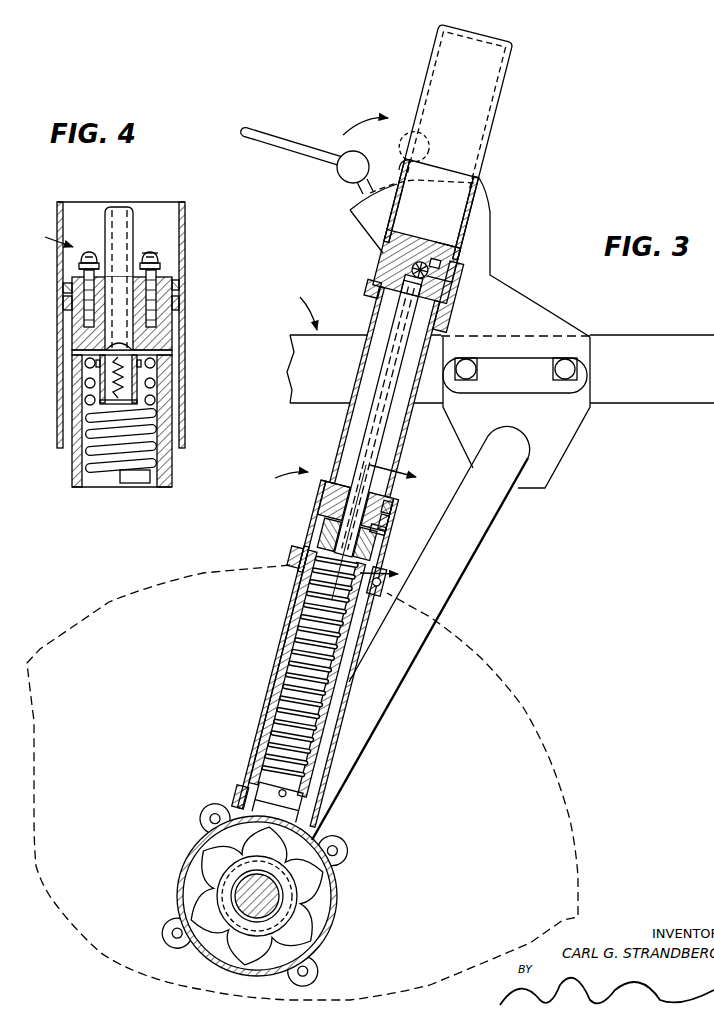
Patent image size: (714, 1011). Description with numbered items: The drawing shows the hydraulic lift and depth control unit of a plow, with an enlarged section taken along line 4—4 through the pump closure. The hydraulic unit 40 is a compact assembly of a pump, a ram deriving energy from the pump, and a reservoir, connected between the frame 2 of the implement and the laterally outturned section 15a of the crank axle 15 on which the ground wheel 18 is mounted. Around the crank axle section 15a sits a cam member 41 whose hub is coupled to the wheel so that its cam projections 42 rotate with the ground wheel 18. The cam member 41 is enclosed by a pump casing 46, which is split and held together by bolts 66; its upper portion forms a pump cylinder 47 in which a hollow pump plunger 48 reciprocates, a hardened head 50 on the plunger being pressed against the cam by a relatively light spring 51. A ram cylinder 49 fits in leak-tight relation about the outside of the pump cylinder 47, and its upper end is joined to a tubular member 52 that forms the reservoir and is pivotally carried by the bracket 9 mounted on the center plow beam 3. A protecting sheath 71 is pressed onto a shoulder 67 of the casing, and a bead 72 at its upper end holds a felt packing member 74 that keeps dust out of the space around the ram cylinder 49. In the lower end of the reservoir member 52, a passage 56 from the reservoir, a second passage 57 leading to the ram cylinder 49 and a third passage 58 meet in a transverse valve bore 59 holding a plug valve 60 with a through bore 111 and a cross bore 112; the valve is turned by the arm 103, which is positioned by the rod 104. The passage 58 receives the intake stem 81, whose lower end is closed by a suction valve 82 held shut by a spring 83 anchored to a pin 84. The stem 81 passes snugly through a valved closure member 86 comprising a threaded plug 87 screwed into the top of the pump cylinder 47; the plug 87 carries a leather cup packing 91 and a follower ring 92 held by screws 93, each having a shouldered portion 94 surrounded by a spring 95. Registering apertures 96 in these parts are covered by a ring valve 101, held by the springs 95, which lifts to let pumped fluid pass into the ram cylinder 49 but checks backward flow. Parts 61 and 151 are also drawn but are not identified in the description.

In FIG. 3, the frame 2 is at (300, 307).
In FIG. 3, the center plow beam 3 is at (628, 352).
In FIG. 3, the line 4— 4 is at (383, 529).
In FIG. 3, the bracket 9 is at (560, 430).
In FIG. 3, the crank axle 15 is at (477, 585).
In FIG. 3, the crank axle section 15a is at (282, 896).
In FIG. 3, the ground wheel 18 is at (528, 706).
In FIG. 3, the hydraulic unit 40 is at (278, 477).
In FIG. 3, the cam member 41 is at (219, 934).
In FIG. 3, the cam projections 42 is at (203, 847).
In FIG. 3, the pump casing 46 is at (170, 905).
In FIG. 3, the pump cylinder 47 is at (266, 695).
In FIG. 4, the pump cylinder 47 is at (172, 427).
In FIG. 3, the pump plunger 48 is at (272, 724).
In FIG. 4, the pump plunger 48 is at (165, 477).
In FIG. 3, the ram cylinder 49 is at (334, 490).
In FIG. 4, the ram cylinder 49 is at (185, 212).
In FIG. 3, the hardened insert or head 50 is at (287, 813).
In FIG. 3, the spring 51 is at (355, 650).
In FIG. 3, the tubular member 52 is at (479, 147).
In FIG. 3, the passage 56 is at (428, 253).
In FIG. 3, the second passage 57 is at (445, 292).
In FIG. 3, the third passage 58 is at (385, 291).
In FIG. 3, the transverse valve bore 59 is at (390, 268).
In FIG. 3, the plug valve 60 is at (419, 255).
In FIG. 3, the tube 61 is at (380, 308).
In FIG. 3, the bolts 66 is at (210, 812).
In FIG. 3, the shoulder 67 is at (238, 795).
In FIG. 3, the protecting sheath 71 is at (283, 638).
In FIG. 3, the bead 72 is at (293, 558).
In FIG. 3, the felt packing member 74 is at (307, 553).
In FIG. 3, the intake pipe 81 is at (376, 377).
In FIG. 4, the intake pipe 81 is at (124, 207).
In FIG. 4, the suction valve 82 is at (92, 414).
In FIG. 4, the spring 83 is at (101, 378).
In FIG. 4, the pin 84 is at (108, 350).
In FIG. 4, the valved closure member 86 is at (46, 239).
In FIG. 3, the threaded plug 87 is at (378, 531).
In FIG. 4, the threaded plug 87 is at (165, 337).
In FIG. 3, the cup-shaped packing member 91 is at (387, 510).
In FIG. 4, the cup-shaped packing member 91 is at (174, 283).
In FIG. 3, the follower ring 92 is at (383, 500).
In FIG. 4, the follower ring 92 is at (63, 288).
In FIG. 4, the screws 93 is at (62, 303).
In FIG. 4, the shouldered portion 94 is at (78, 277).
In FIG. 4, the spring 95 is at (78, 265).
In FIG. 3, the registering apertures 96 is at (338, 512).
In FIG. 3, the ring valve 101 is at (348, 487).
In FIG. 4, the ring valve 101 is at (143, 252).
In FIG. 3, the arm 103 is at (360, 188).
In FIG. 3, the rod 104 is at (255, 128).
In FIG. 3, the through bore 111 is at (450, 260).
In FIG. 3, the cross bore 112 is at (383, 260).
In FIG. 4, the retainer 151 is at (96, 363).